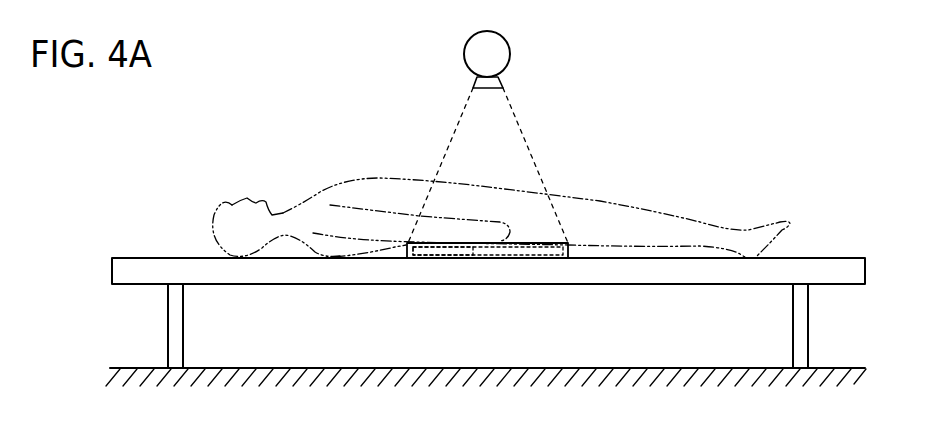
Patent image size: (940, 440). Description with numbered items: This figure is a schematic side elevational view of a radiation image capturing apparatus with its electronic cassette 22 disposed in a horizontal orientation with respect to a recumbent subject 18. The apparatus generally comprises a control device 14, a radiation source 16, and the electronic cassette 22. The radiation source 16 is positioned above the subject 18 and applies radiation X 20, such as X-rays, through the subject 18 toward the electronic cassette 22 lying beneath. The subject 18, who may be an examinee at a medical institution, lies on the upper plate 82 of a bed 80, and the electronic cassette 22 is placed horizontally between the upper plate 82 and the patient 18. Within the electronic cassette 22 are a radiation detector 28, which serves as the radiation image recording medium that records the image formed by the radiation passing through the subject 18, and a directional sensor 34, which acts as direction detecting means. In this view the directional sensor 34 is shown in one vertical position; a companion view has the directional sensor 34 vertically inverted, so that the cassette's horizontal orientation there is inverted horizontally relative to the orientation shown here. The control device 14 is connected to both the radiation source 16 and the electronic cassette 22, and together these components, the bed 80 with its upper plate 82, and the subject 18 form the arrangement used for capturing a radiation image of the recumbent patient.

The control device 14 is at (512, 55).
The radiation source 16 is at (465, 51).
The subject 18 is at (228, 202).
The radiation 20 is at (452, 120).
The electronic cassette 22 is at (498, 283).
The radiation detector 28 is at (518, 254).
The directional sensor 34 is at (440, 253).
The bed 80 is at (801, 328).
The upper plate 82 is at (861, 275).